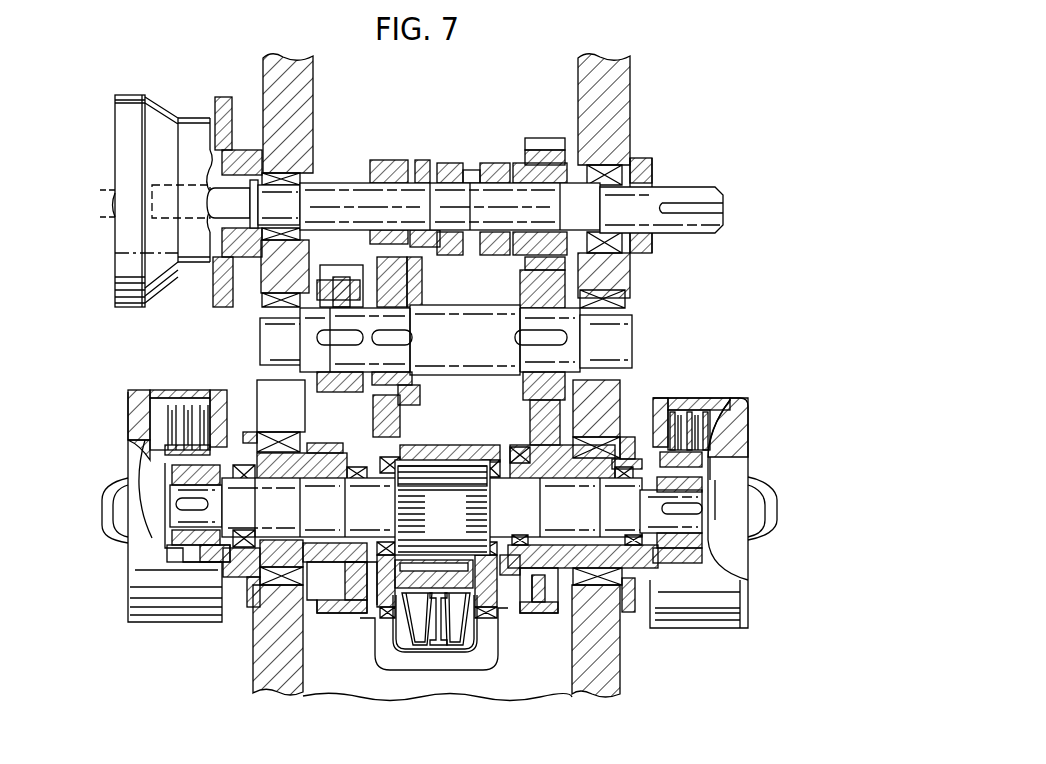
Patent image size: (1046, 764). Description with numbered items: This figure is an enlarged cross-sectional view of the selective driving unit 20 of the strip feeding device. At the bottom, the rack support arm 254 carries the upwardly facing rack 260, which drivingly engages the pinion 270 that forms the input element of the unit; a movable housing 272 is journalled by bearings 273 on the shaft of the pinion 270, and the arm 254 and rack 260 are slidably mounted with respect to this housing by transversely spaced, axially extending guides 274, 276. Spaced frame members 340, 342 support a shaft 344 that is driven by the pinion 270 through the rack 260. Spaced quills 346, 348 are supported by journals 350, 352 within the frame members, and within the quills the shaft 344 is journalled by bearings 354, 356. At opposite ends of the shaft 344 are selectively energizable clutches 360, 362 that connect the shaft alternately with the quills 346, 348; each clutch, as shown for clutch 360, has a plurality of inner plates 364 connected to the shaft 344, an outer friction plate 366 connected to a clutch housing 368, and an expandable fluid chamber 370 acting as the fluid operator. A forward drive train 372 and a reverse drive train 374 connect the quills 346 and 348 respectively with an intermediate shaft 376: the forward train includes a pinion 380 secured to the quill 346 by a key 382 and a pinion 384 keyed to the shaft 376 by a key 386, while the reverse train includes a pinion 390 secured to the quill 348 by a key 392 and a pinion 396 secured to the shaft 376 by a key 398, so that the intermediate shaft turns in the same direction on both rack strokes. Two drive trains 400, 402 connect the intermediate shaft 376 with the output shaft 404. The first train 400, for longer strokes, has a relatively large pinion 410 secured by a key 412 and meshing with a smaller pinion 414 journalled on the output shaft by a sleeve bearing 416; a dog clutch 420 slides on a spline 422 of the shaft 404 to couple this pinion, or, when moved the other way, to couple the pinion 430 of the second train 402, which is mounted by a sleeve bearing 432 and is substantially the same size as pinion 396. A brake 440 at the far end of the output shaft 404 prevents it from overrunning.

The selective driving unit 20 is at (549, 46).
The rack support arm 254 is at (422, 632).
The rack 260 is at (442, 507).
The pinion 270 is at (377, 597).
The movable housing 272 is at (475, 652).
The bearings 273 is at (442, 490).
The guide 274 is at (376, 643).
The guide 276 is at (487, 580).
The frame member 340 is at (302, 118).
The frame member 342 is at (632, 97).
The shaft 344 is at (597, 632).
The quill 346 is at (253, 627).
The quill 348 is at (640, 425).
The journal 350 is at (278, 440).
The journal 352 is at (595, 434).
The bearing 354 is at (247, 486).
The bearing 356 is at (342, 478).
The clutch 360 is at (160, 623).
The clutch 362 is at (705, 620).
The inner plates 364 is at (210, 395).
The outer friction plate 366 is at (156, 388).
The clutch housing 368 is at (138, 388).
The expandable fluid chamber 370 is at (128, 428).
The forward drive train 372 is at (304, 389).
The reverse drive train 374 is at (505, 392).
The intermediate shaft 376 is at (462, 310).
The pinion 380 is at (401, 438).
The key 382 is at (317, 460).
The pinion 384 is at (340, 270).
The key 386 is at (350, 330).
The pinion 390 is at (525, 420).
The key 392 is at (572, 478).
The pinion 396 is at (626, 278).
The key 398 is at (558, 340).
The first drive train 400 is at (416, 271).
The second drive train 402 is at (509, 266).
The output shaft 404 is at (684, 186).
The pinion 410 is at (402, 404).
The key 412 is at (410, 341).
The pinion 414 is at (395, 158).
The sleeve bearing 416 is at (418, 163).
The dog clutch 420 is at (455, 163).
The spline 422 is at (470, 180).
The pinion 430 is at (540, 137).
The sleeve bearing 432 is at (566, 168).
The brake 440 is at (115, 292).